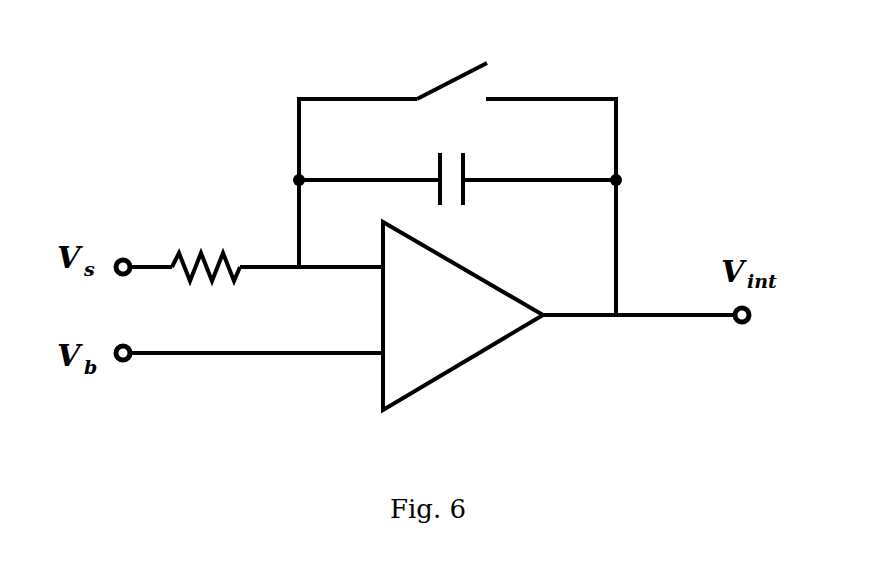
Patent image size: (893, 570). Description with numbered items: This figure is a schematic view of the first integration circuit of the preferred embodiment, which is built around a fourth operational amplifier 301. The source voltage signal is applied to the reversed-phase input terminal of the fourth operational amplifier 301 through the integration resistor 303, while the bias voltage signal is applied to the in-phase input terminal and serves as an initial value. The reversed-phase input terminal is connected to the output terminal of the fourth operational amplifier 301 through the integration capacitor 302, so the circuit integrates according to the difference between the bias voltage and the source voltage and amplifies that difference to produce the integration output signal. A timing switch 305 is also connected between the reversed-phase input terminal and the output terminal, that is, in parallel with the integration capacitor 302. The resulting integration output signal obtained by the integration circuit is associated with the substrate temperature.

The fourth operational amplifier 301 is at (440, 378).
The integration capacitor 302 is at (463, 190).
The integration resistor 303 is at (178, 257).
The timing switch 305 is at (445, 82).